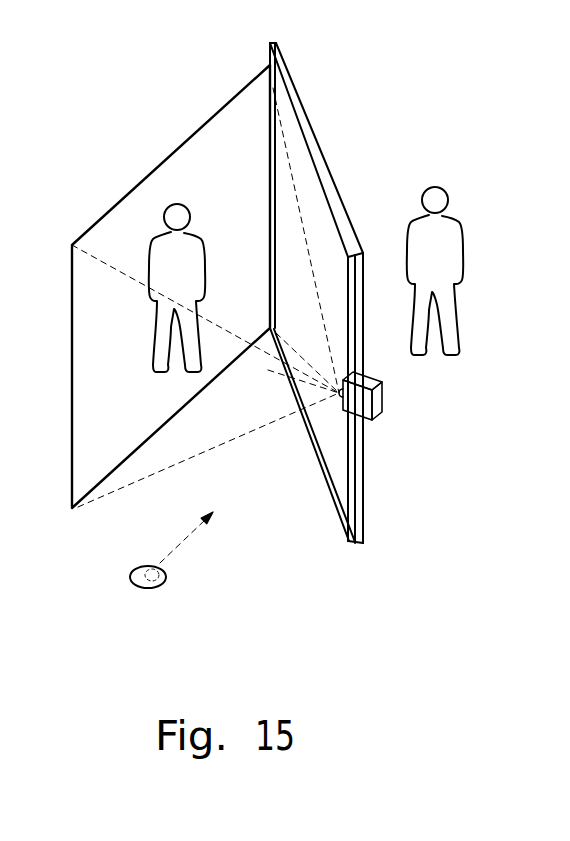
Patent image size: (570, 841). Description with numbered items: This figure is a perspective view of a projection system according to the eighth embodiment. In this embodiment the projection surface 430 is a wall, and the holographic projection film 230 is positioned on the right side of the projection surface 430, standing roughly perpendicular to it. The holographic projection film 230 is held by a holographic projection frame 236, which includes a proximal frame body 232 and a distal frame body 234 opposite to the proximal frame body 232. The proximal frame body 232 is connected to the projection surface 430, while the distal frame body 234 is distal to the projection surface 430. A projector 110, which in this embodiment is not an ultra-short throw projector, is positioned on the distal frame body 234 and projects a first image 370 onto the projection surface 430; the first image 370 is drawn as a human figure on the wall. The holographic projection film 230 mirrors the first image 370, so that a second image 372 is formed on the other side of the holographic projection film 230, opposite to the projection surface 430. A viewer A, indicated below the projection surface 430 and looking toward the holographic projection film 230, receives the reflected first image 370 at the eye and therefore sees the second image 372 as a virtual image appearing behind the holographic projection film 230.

The projector 110 is at (375, 410).
The holographic projection film 230 is at (331, 324).
The proximal frame body 232 is at (268, 108).
The distal frame body 234 is at (362, 352).
The holographic projection frame 236 is at (348, 543).
The first image 370 is at (150, 233).
The second image 372 is at (460, 230).
The projection surface 430 is at (103, 467).
The viewer A is at (147, 590).